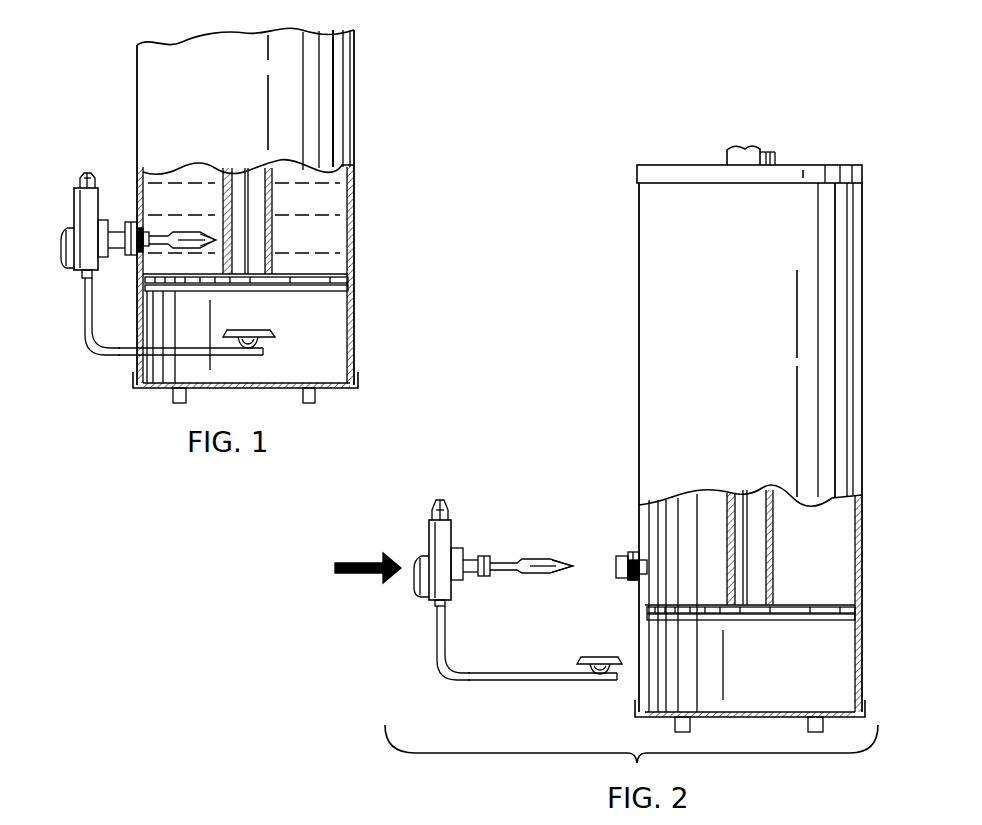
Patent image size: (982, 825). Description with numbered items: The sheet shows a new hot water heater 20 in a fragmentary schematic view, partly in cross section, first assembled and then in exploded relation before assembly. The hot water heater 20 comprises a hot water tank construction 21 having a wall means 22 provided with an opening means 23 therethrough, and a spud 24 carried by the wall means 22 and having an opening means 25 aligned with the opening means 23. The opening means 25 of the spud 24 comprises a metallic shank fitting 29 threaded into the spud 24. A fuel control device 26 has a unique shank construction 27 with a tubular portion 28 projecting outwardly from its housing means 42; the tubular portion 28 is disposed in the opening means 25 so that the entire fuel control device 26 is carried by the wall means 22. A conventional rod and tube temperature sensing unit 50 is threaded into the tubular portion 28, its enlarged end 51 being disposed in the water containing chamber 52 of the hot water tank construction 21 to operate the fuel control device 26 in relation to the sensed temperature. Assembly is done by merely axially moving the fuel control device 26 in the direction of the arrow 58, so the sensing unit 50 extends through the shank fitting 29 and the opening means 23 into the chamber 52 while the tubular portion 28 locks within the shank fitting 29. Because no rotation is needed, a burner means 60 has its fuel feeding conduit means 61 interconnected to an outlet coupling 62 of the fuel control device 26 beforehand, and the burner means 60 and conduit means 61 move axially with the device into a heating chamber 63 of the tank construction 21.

In FIG. 1, the hot water heater 20 is at (378, 104).
In FIG. 2, the hot water heater 20 is at (810, 150).
In FIG. 1, the hot water tank construction 21 is at (355, 212).
In FIG. 2, the hot water tank construction 21 is at (652, 270).
In FIG. 1, the wall means 22 is at (355, 237).
In FIG. 2, the wall means 22 is at (860, 547).
In FIG. 1, the opening means 23 is at (140, 240).
In FIG. 2, the opening means 23 is at (645, 568).
In FIG. 1, the spud 24 is at (136, 226).
In FIG. 2, the spud 24 is at (640, 556).
In FIG. 1, the opening means 25 is at (130, 258).
In FIG. 2, the opening means 25 is at (632, 582).
In FIG. 1, the fuel control device 26 is at (80, 203).
In FIG. 2, the fuel control device 26 is at (432, 532).
In FIG. 1, the shank construction 27 is at (68, 246).
In FIG. 2, the shank construction 27 is at (462, 584).
In FIG. 2, the tubular portion 28 is at (482, 556).
In FIG. 1, the shank fitting 29 is at (137, 226).
In FIG. 2, the shank fitting 29 is at (632, 558).
In FIG. 2, the housing means 42 is at (424, 592).
In FIG. 1, the rod and tube temperature sensing unit 50 is at (185, 252).
In FIG. 2, the rod and tube temperature sensing unit 50 is at (500, 560).
In FIG. 1, the enlarged end 51 is at (200, 232).
In FIG. 2, the enlarged end 51 is at (531, 575).
In FIG. 1, the water containing chamber 52 is at (318, 202).
In FIG. 2, the water containing chamber 52 is at (815, 569).
In FIG. 2, the arrow 58 is at (364, 560).
In FIG. 1, the burner means 60 is at (254, 336).
In FIG. 2, the burner means 60 is at (590, 657).
In FIG. 1, the fuel feeding conduit means 61 is at (222, 352).
In FIG. 2, the fuel feeding conduit means 61 is at (537, 684).
In FIG. 1, the outlet coupling 62 is at (82, 276).
In FIG. 2, the outlet coupling 62 is at (432, 604).
In FIG. 1, the heating chamber 63 is at (340, 330).
In FIG. 2, the heating chamber 63 is at (835, 666).